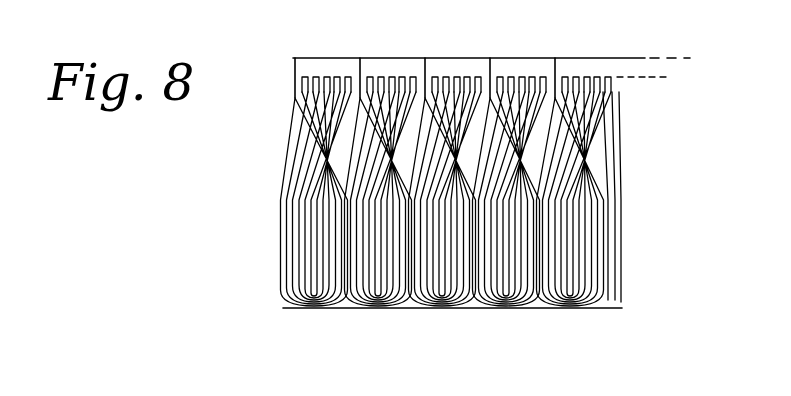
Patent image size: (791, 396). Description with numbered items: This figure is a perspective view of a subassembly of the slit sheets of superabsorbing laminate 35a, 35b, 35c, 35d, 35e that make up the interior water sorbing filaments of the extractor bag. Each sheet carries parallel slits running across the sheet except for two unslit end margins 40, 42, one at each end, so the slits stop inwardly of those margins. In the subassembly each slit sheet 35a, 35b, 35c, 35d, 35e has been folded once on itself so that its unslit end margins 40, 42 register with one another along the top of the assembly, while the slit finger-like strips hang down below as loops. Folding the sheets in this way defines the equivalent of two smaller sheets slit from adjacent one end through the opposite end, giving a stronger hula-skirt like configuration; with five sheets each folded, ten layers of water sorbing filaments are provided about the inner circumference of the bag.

The end margin 40 is at (483, 54).
The end margin 42 is at (484, 84).
The slit sheet of superabsorbing laminate 35a is at (283, 282).
The slit sheet of superabsorbing laminate 35b is at (387, 309).
The slit sheet of superabsorbing laminate 35c is at (448, 309).
The slit sheet of superabsorbing laminate 35d is at (520, 309).
The slit sheet of superabsorbing laminate 35e is at (595, 309).